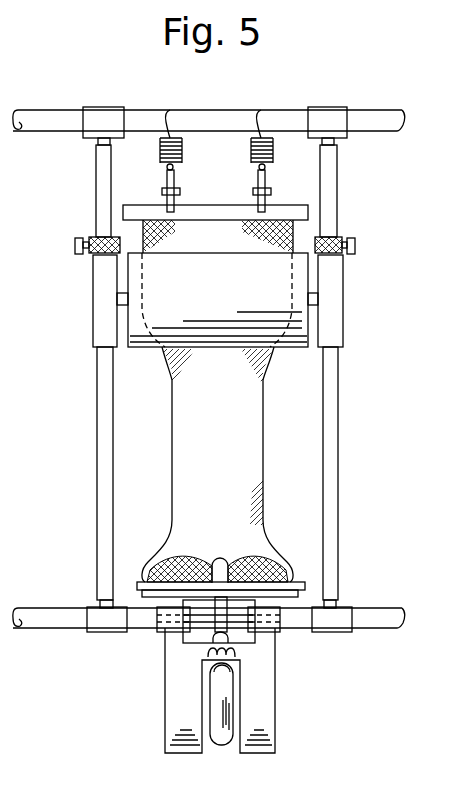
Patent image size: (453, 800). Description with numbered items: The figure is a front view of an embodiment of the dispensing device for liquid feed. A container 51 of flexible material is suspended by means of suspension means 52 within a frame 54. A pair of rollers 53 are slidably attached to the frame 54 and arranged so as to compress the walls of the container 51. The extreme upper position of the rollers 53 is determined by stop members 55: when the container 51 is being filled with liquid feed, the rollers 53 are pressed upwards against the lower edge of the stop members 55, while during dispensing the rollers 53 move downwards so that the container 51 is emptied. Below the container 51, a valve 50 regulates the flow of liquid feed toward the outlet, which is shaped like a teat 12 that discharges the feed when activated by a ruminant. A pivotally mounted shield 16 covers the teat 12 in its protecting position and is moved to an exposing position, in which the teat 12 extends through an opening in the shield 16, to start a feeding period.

The teat 12 is at (233, 729).
The shield 16 is at (275, 691).
The valve 50 is at (200, 637).
The container 51 is at (262, 450).
The suspension means 52 is at (167, 188).
The rollers 53 is at (307, 330).
The frame 54 is at (97, 447).
The stop members 55 is at (75, 246).